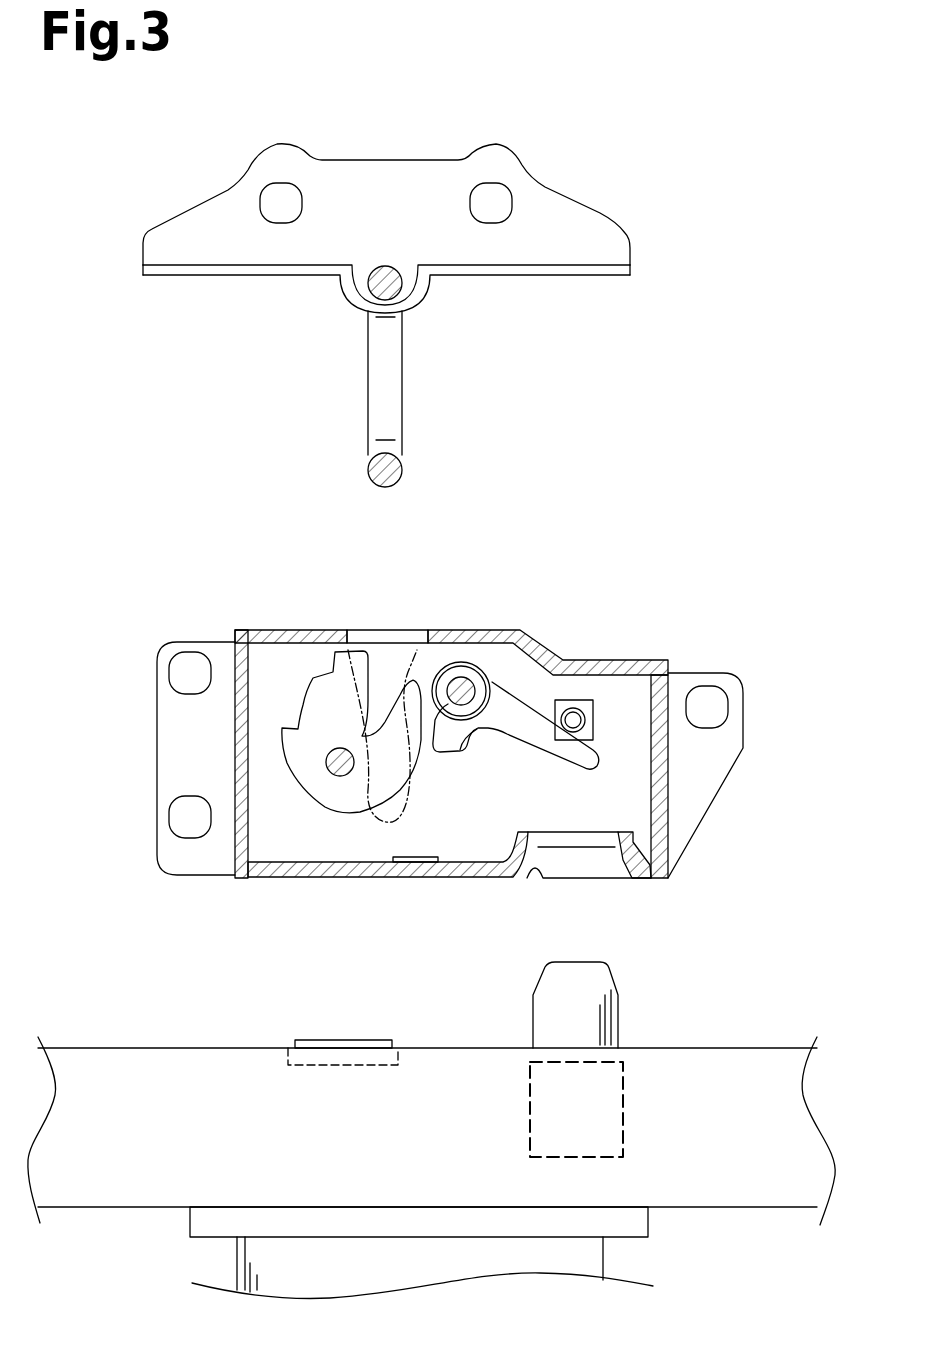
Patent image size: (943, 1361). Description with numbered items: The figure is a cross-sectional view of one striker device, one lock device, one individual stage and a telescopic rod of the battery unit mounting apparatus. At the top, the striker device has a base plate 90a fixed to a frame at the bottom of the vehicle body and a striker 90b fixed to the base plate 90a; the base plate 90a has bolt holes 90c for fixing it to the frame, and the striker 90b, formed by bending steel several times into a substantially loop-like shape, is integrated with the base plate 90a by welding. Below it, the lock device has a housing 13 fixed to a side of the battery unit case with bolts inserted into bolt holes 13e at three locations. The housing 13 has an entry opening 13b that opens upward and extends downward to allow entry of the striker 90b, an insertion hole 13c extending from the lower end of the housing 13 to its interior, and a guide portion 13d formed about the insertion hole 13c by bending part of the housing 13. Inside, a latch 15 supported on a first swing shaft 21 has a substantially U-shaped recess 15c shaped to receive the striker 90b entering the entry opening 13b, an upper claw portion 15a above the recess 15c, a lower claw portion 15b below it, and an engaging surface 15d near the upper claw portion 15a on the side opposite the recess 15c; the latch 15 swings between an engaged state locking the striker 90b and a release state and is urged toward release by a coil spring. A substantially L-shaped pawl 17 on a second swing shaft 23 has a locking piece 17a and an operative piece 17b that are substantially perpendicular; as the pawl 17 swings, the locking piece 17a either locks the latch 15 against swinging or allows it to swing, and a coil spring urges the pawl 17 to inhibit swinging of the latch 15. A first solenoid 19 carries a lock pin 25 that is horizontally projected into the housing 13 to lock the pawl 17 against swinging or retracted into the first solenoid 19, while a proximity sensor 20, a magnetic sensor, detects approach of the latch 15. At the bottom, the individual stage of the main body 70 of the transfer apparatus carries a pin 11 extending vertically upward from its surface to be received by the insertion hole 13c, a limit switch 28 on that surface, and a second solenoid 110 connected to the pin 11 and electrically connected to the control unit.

The base plate 90a is at (370, 183).
The striker 90b is at (393, 365).
The bolt holes 90c is at (275, 192).
The housing 13 is at (445, 754).
The entry opening 13b is at (427, 650).
The insertion hole 13c is at (528, 882).
The guide portion 13d is at (628, 880).
The bolt holes 13e is at (188, 662).
The latch 15 is at (298, 710).
The upper claw portion 15a is at (360, 655).
The lower claw portion 15b is at (402, 682).
The recess 15c is at (308, 700).
The engaging surface 15d is at (325, 662).
The pawl 17 is at (538, 747).
The locking piece 17a is at (488, 752).
The operative piece 17b is at (598, 760).
The first solenoid 19 is at (588, 714).
The proximity sensor 20 is at (415, 863).
The first swing shaft 21 is at (340, 763).
The second swing shaft 23 is at (470, 688).
The lock pin 25 is at (574, 716).
The main body 70 is at (158, 1012).
The pin 11 is at (600, 985).
The limit switch 28 is at (345, 1052).
The second solenoid 110 is at (610, 1115).